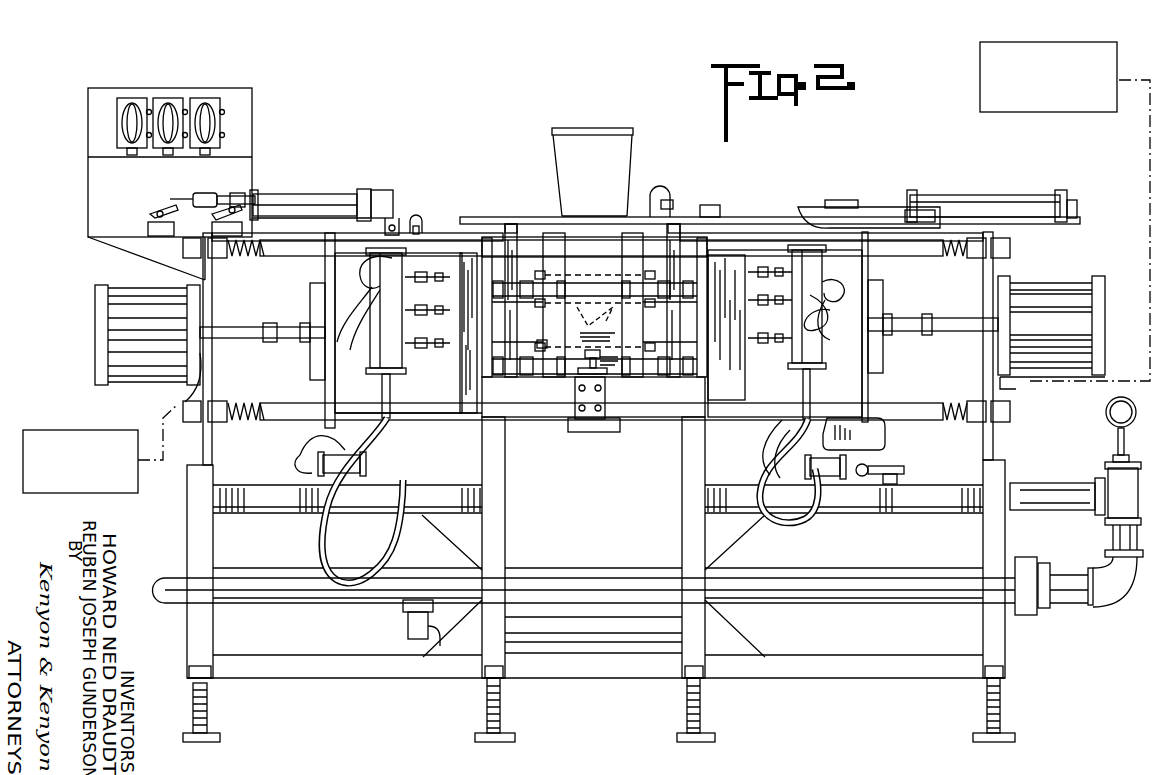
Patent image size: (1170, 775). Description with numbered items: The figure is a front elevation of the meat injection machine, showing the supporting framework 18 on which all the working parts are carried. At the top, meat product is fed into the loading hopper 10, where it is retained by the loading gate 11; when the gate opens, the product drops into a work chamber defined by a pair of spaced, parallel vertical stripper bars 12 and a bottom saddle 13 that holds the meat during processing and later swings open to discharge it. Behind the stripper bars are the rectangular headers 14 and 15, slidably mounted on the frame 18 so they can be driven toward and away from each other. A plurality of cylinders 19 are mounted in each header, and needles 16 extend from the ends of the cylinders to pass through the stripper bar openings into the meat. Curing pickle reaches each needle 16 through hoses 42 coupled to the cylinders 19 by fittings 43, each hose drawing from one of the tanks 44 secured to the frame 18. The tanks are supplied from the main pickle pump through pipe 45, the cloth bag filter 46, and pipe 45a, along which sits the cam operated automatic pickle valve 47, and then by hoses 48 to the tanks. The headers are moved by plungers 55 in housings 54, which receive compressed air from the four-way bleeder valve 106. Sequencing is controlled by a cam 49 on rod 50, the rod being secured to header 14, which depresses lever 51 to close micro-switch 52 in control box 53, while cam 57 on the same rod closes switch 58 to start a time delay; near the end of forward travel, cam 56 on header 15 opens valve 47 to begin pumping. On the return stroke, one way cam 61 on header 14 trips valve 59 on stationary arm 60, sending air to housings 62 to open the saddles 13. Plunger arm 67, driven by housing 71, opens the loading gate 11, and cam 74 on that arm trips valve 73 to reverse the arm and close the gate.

The loading hopper 10 is at (610, 160).
The loading gate 11 is at (487, 217).
The vertical stripper bars 12 is at (553, 238).
The bottom saddle 13 is at (573, 362).
The rectangular header 14 is at (330, 388).
The rectangular header 15 is at (868, 385).
The needles 16 is at (595, 322).
The supporting framework 18 is at (190, 513).
The cylinders 19 is at (538, 345).
The hoses 42 is at (355, 274).
The fittings 43 is at (427, 310).
The tanks 44 is at (385, 320).
The pipe 45 is at (178, 603).
The valved pipe 45a is at (1068, 507).
The cloth bag filter 46 is at (850, 588).
The cam operated automatic pickle valve 47 is at (905, 473).
The hoses 48 is at (380, 468).
The cam 49 is at (205, 193).
The rod 50 is at (315, 194).
The lever 51 is at (160, 210).
The micro-switch 52 is at (148, 228).
The control box 53 is at (245, 102).
The housings 54 is at (152, 365).
The plungers 55 is at (292, 325).
The cam 56 is at (888, 436).
The cam 57 is at (240, 193).
The switch 58 is at (245, 225).
The valve 59 is at (394, 218).
The stationary arm 60 is at (383, 190).
The one way cam 61 is at (420, 223).
The housings 62 is at (592, 418).
The plunger arm 67 is at (878, 207).
The housing 71 is at (985, 205).
The valve 73 is at (838, 200).
The cam 74 is at (710, 205).
The four-way bleeder valve 106 is at (1068, 108).